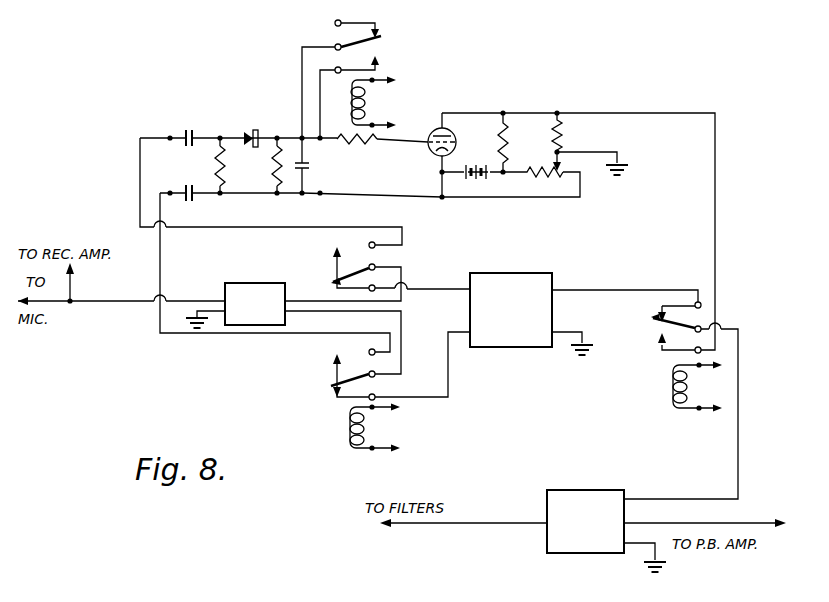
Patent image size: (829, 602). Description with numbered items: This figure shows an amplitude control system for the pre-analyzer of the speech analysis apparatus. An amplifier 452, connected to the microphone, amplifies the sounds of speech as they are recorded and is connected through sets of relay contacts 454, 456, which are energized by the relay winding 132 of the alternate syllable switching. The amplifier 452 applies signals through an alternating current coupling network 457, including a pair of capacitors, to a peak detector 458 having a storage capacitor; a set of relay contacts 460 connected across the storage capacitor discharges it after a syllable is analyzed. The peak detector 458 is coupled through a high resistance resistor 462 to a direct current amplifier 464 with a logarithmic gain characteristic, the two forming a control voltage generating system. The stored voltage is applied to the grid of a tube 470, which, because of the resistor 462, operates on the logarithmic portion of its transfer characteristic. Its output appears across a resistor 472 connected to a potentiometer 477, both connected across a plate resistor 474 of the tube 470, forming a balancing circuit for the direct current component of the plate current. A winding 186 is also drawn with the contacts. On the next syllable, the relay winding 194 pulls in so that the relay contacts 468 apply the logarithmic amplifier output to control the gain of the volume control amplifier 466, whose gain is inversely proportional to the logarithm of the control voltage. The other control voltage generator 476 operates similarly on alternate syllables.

The alternating current coupling network 457 is at (208, 122).
The peak detector 458 is at (272, 122).
The relay contacts 460 is at (418, 56).
The relay coil 186 is at (365, 103).
The high resistance resistor 462 is at (352, 146).
The tube 470 is at (436, 131).
The direct current amplifier 464 is at (535, 133).
The plate resistor 474 is at (497, 140).
The potentiometer 477 is at (542, 168).
The resistor 472 is at (562, 146).
The amplifier 452 is at (257, 283).
The relay contacts 454 is at (337, 266).
The relay contacts 456 is at (336, 376).
The relay winding 132 is at (398, 437).
The control voltage generator 476 is at (526, 273).
The relay contacts 468 is at (677, 327).
The relay winding 194 is at (722, 394).
The volume control amplifier 466 is at (598, 490).